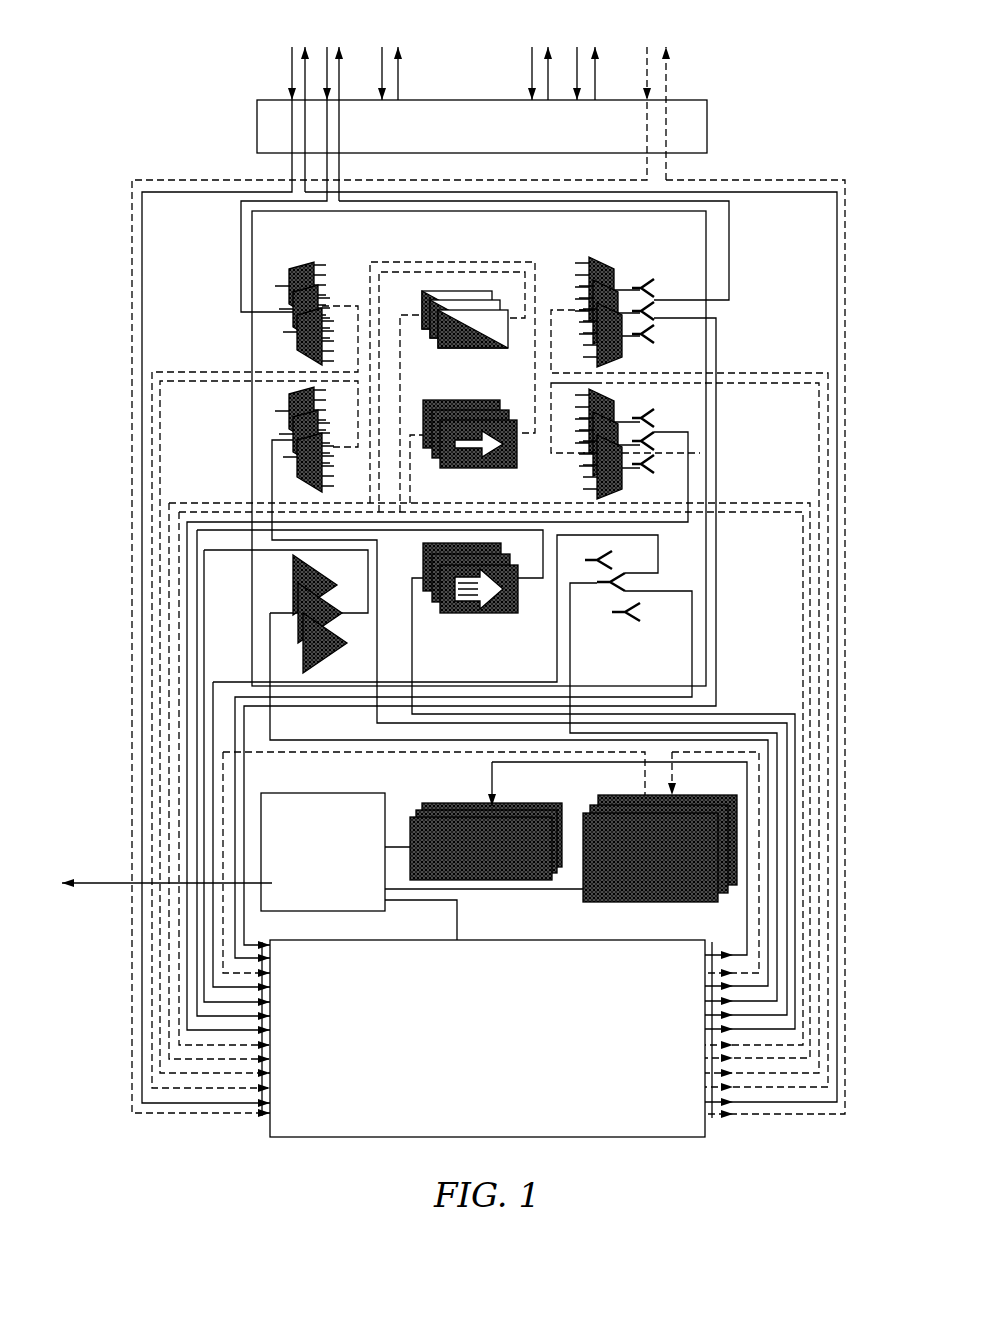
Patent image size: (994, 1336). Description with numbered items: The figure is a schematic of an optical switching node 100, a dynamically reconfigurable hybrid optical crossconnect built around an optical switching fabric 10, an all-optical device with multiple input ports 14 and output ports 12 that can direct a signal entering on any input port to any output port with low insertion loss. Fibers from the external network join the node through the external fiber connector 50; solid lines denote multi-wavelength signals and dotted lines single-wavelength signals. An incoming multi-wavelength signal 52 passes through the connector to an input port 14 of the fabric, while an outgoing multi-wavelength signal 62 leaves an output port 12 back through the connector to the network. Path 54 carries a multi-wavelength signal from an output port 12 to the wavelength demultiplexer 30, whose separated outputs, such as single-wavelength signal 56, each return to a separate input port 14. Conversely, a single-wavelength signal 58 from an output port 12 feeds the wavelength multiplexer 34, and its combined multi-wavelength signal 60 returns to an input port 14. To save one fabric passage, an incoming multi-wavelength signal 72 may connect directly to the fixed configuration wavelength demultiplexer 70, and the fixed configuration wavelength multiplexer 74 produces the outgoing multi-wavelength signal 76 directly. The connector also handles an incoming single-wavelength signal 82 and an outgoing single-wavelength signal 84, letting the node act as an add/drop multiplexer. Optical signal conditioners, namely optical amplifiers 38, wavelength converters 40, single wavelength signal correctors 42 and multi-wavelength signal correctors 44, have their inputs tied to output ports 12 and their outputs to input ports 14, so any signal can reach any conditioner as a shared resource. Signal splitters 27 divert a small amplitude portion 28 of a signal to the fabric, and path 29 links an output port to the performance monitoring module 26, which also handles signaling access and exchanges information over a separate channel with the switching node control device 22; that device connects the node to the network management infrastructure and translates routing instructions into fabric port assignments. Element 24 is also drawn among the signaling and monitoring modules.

The optical switching node 100 is at (760, 60).
The external fiber connector 50 is at (707, 138).
The multi-wavelength signal 52 is at (292, 65).
The multi-wavelength signal 62 is at (305, 45).
The incoming multi-wavelength signal 72 is at (327, 45).
The outgoing multi-wavelength signal 76 is at (339, 66).
The incoming single-wavelength signal 82 is at (647, 57).
The outgoing single-wavelength signal 84 is at (666, 78).
The fixed configuration wavelength demultiplexer 70 is at (299, 270).
The fixed configuration wavelength multiplexer 74 is at (612, 300).
The wavelength demultiplexer 30 is at (292, 432).
The wavelength multiplexer 34 is at (618, 475).
The path 54 is at (272, 476).
The single-wavelength signal 56 is at (160, 400).
The single-wavelength signal 58 is at (785, 384).
The multi-wavelength signal 60 is at (688, 458).
The wavelength converters 40 is at (505, 335).
The single wavelength signal correctors 42 is at (517, 458).
The multi-wavelength signal correctors 44 is at (500, 607).
The optical amplifiers 38 is at (298, 600).
The signal splitters 27 is at (628, 585).
The small amplitude portion 28 is at (692, 645).
The switching node control device 22 is at (383, 793).
The performance monitoring module 26 is at (533, 820).
The signaling access 24 is at (605, 897).
The path 29 is at (745, 915).
The optical switching fabric 10 is at (487, 1038).
The output ports 12 is at (713, 1117).
The input ports 14 is at (259, 1118).